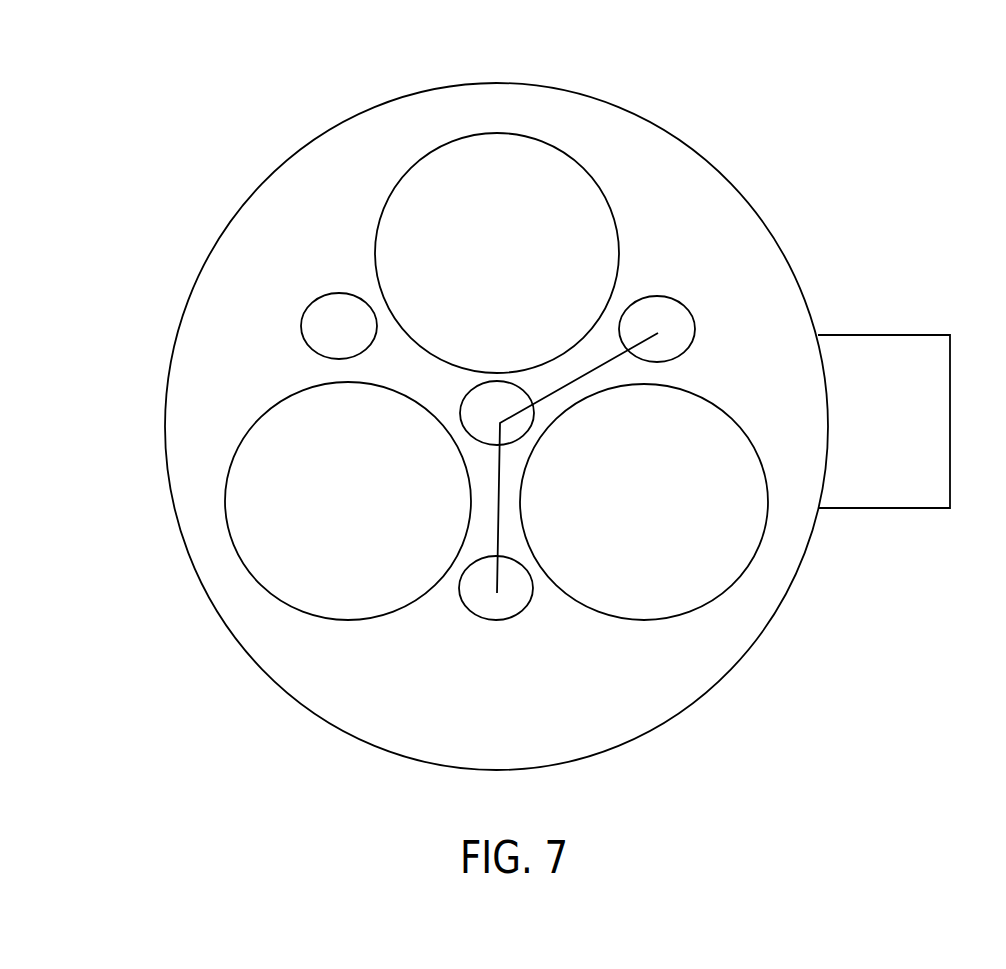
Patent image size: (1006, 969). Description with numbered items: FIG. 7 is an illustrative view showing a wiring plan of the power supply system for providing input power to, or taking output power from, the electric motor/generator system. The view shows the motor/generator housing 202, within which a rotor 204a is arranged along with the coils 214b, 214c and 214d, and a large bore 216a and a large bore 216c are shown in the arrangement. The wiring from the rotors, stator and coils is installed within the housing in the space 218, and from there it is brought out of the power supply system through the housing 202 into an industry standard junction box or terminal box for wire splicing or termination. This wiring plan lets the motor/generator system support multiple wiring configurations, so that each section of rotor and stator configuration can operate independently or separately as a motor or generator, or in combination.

The motor/generator housing 202 is at (675, 133).
The rotor 204a is at (318, 305).
The coil 214b is at (667, 297).
The coil 214c is at (512, 613).
The coil 214d is at (470, 403).
The large bore 216a is at (545, 140).
The large bore 216c is at (247, 433).
The space 218 is at (857, 335).